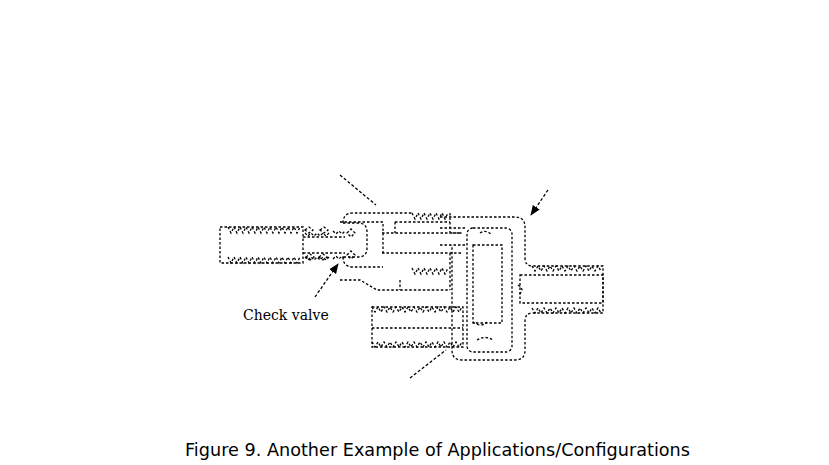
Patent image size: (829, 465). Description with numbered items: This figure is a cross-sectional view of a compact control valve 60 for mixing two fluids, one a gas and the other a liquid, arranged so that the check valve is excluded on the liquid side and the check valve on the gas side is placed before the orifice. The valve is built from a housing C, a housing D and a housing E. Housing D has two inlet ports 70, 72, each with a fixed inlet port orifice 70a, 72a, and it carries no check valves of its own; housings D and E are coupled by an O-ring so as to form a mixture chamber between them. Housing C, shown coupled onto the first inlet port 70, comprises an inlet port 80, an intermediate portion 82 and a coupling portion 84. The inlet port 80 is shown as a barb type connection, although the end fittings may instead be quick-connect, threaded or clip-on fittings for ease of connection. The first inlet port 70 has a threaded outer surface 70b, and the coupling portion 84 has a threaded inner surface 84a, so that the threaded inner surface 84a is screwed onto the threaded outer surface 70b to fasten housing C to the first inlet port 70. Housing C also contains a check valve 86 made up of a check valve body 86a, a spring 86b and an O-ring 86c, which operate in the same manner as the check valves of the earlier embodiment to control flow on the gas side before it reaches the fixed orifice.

The compact control valve 60 is at (135, 119).
The inlet port 80 is at (221, 248).
The check valve 86 is at (297, 247).
The check valve body 86a is at (318, 250).
The spring 86b is at (328, 233).
The O-ring 86c is at (352, 232).
The intermediate portion 82 is at (383, 206).
The coupling portion 84 is at (424, 212).
The threaded inner surface 84a is at (416, 212).
The first inlet port 70 is at (381, 262).
The second inlet port 72 is at (390, 335).
The fixed inlet port orifice 70a is at (461, 240).
The threaded outer surface 70b is at (418, 216).
The fixed inlet port orifice 72a is at (478, 327).